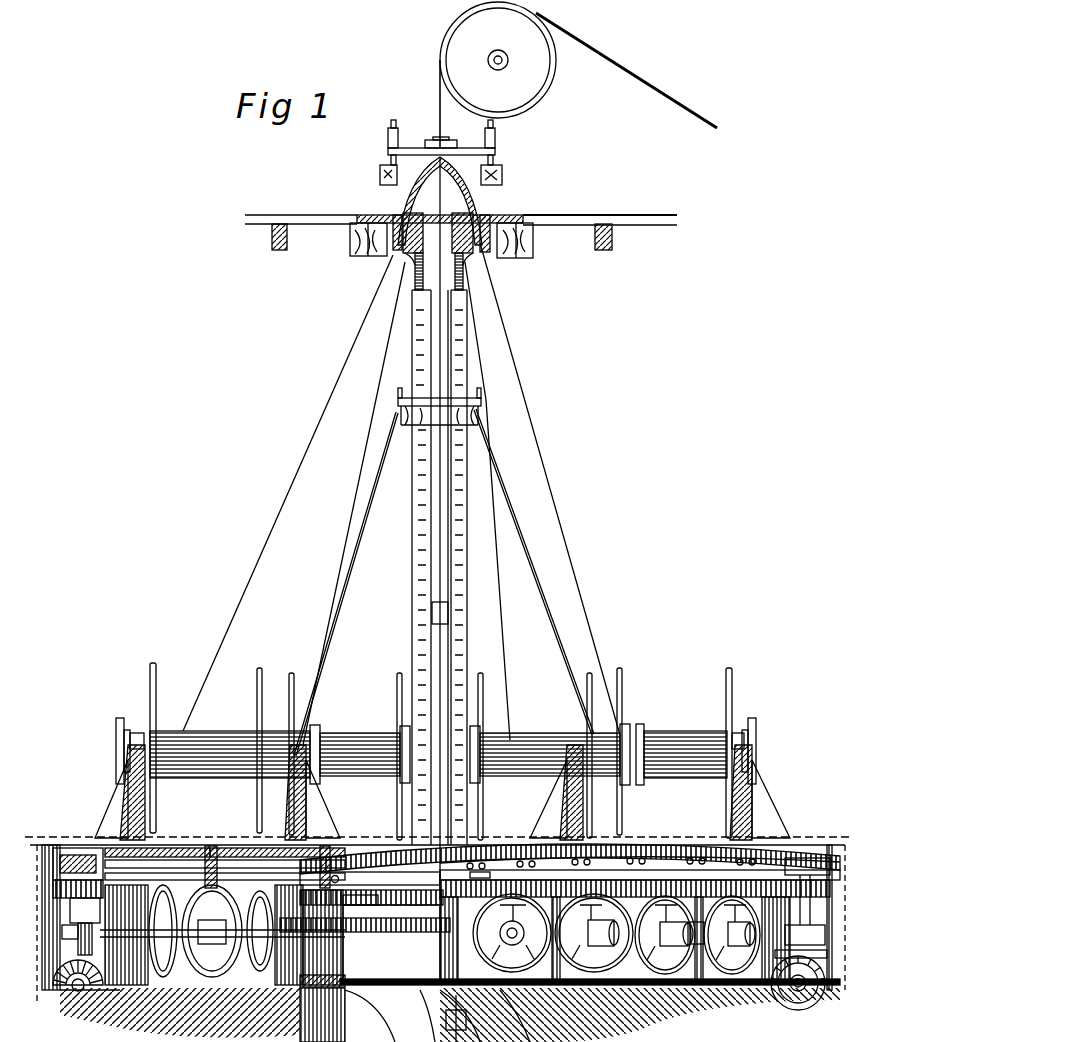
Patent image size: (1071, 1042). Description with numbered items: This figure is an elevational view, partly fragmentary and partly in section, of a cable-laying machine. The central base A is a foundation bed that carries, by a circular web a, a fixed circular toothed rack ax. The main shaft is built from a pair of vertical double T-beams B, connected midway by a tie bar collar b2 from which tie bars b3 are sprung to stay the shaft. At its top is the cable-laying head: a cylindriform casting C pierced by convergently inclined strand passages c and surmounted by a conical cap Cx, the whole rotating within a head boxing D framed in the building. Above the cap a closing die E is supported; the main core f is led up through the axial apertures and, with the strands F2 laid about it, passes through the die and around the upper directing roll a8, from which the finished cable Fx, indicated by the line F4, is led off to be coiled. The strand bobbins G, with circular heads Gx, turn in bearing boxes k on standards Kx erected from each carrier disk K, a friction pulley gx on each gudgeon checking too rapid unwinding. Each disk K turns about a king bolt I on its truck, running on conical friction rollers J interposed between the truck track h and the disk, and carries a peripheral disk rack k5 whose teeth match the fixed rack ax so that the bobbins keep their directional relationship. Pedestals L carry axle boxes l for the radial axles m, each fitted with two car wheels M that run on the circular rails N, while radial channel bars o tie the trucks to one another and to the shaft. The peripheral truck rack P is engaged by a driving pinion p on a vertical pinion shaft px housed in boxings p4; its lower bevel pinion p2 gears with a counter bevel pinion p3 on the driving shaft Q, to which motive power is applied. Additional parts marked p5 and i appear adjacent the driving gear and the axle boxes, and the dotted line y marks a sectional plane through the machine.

The upper directing roll a8 is at (498, 60).
The cable Fx is at (440, 80).
The driving belt F4 is at (626, 70).
The closing die E is at (436, 142).
The conical cap Cx is at (440, 201).
The cylindriform casting C is at (488, 216).
The head boxing D is at (372, 250).
The strand passages c is at (410, 262).
The double T-beams B is at (412, 545).
The tie bar collar b2 is at (481, 403).
The tie bars b3 is at (520, 528).
The strands F2 is at (548, 428).
The main core f is at (440, 512).
The circular heads Gx is at (156, 668).
The strand bobbins G is at (228, 718).
The friction pulley gx is at (768, 740).
The circular track h is at (137, 733).
The bearing boxes k is at (738, 733).
The standards Kx is at (772, 795).
The carrier disk K is at (178, 848).
The king bolt I is at (211, 846).
The friction rollers J is at (110, 848).
The dotted line y y is at (437, 911).
The disk rack k5 is at (520, 845).
The peripheral truck rack P is at (660, 862).
The shaft o is at (370, 879).
The driving pinion p is at (53, 885).
The pinion shaft px is at (62, 930).
The bevel pinion p2 is at (827, 958).
The counter bevel pinion p3 is at (53, 975).
The boxings p4 is at (814, 916).
The shaft p5 is at (55, 995).
The pedestals L is at (616, 934).
The axle boxes l is at (435, 933).
The car wheels M is at (415, 935).
The axles m is at (212, 944).
The circular web a is at (371, 936).
The fixed circular toothed rack ax is at (368, 916).
The central base A is at (395, 1012).
The circular rails N is at (640, 990).
The driving shaft Q is at (798, 990).
The bearing i is at (691, 939).